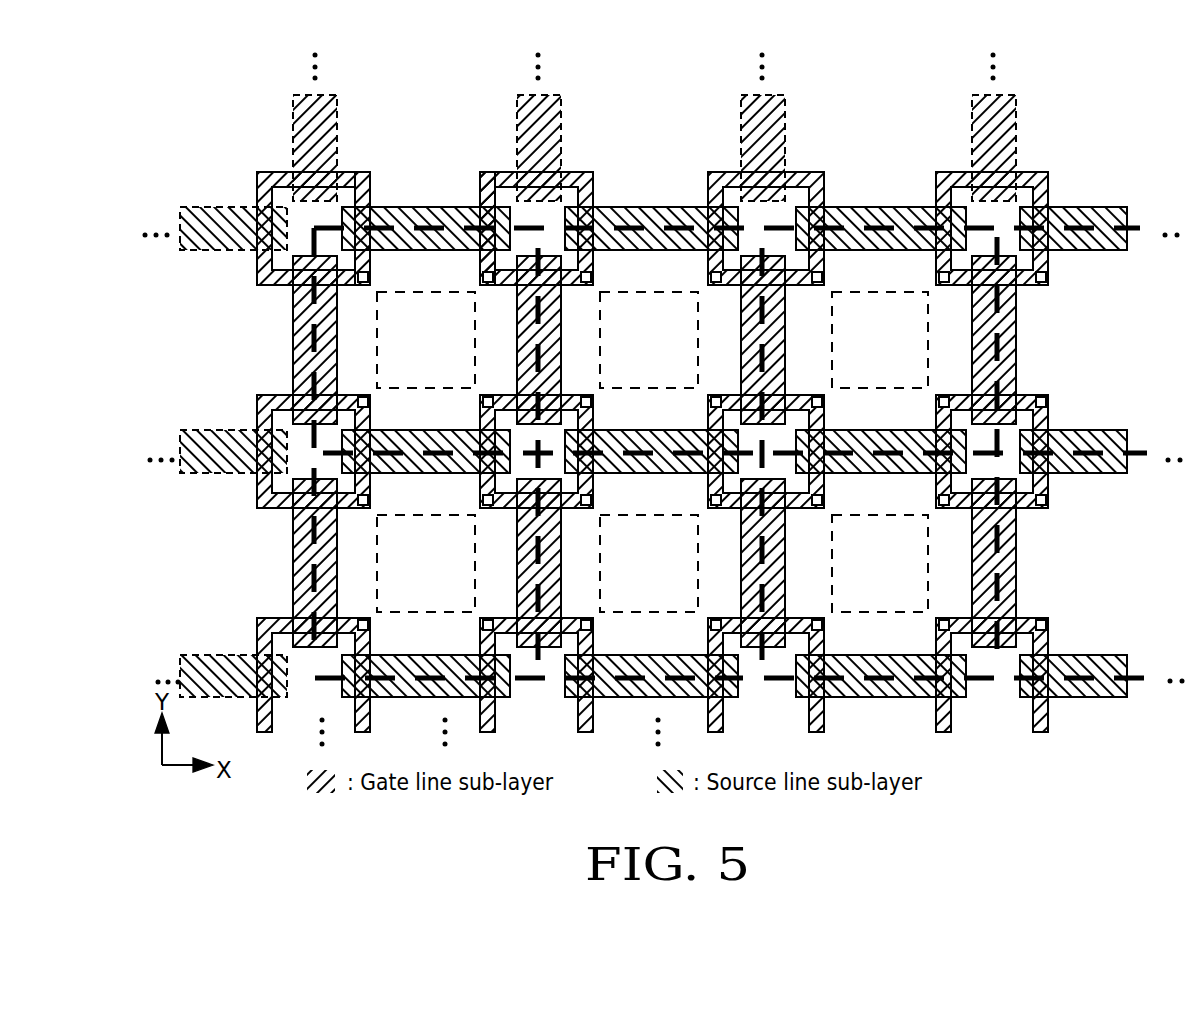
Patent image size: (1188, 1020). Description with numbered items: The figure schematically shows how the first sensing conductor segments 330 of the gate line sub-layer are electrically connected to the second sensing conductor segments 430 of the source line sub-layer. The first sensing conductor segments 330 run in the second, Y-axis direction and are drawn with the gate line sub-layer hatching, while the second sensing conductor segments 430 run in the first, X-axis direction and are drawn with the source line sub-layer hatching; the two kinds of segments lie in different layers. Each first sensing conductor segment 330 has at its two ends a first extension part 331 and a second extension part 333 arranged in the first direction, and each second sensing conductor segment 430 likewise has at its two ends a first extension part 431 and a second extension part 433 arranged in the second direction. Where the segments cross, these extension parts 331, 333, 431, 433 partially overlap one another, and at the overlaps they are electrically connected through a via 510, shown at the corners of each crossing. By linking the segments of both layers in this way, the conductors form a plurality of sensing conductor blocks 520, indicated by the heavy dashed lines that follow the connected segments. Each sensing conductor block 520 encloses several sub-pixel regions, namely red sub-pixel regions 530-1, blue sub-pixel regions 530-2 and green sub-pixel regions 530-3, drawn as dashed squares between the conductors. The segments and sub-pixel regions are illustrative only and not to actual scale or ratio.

The first sensing conductor segment 330 is at (293, 343).
The first extension part 331 is at (287, 283).
The second extension part 333 is at (290, 398).
The second sensing conductor segment 430 is at (427, 207).
The first extension part 431 is at (373, 186).
The second extension part 433 is at (479, 172).
The via 510 is at (1047, 283).
The sensing conductor block 520 is at (883, 680).
The red sub-pixel region 530-1 is at (425, 340).
The blue sub-pixel region 530-2 is at (648, 340).
The green sub-pixel region 530-3 is at (880, 340).